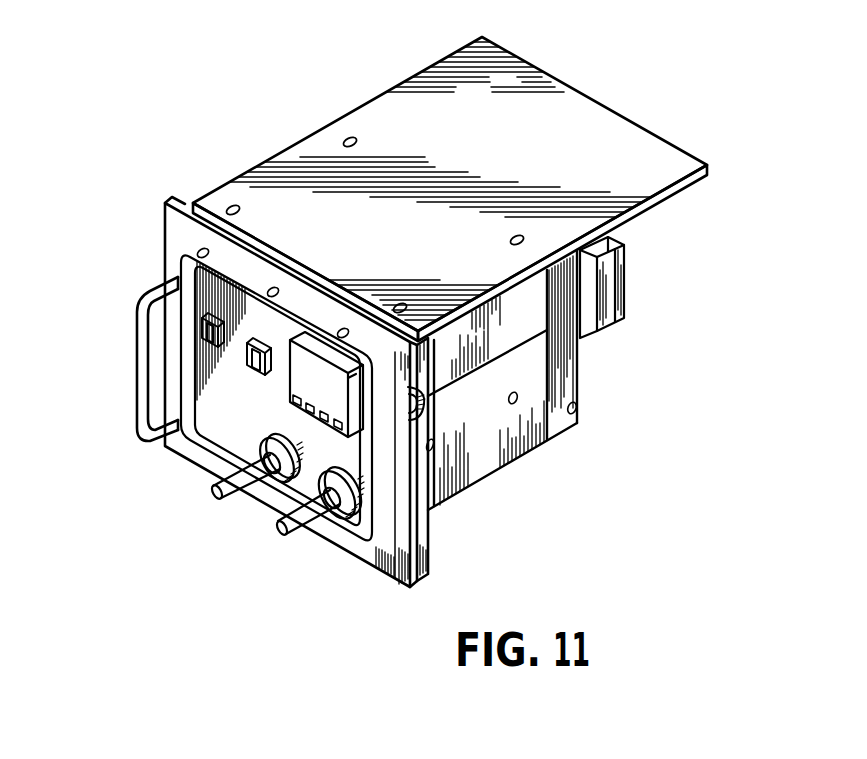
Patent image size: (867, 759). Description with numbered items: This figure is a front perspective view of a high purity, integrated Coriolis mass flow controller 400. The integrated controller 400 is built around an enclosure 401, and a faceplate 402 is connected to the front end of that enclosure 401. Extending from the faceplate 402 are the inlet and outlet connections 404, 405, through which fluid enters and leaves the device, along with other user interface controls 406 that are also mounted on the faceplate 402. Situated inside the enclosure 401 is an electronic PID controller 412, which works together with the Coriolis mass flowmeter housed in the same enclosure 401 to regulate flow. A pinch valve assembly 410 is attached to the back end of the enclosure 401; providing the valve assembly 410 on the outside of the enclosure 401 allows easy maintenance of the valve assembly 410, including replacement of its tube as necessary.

The integrated Coriolis mass flow controller 400 is at (176, 166).
The enclosure 401 is at (507, 455).
The faceplate 402 is at (177, 437).
The inlet connection 404 is at (238, 500).
The outlet connection 405 is at (303, 537).
The user interface controls 406 is at (252, 340).
The pinch valve assembly 410 is at (624, 298).
The electronic PID controller 412 is at (313, 365).